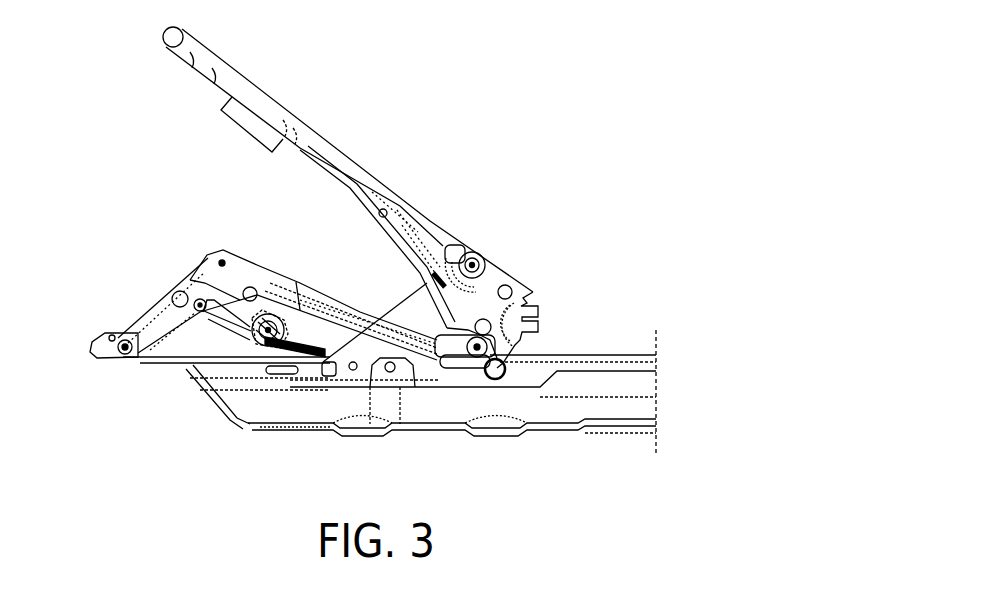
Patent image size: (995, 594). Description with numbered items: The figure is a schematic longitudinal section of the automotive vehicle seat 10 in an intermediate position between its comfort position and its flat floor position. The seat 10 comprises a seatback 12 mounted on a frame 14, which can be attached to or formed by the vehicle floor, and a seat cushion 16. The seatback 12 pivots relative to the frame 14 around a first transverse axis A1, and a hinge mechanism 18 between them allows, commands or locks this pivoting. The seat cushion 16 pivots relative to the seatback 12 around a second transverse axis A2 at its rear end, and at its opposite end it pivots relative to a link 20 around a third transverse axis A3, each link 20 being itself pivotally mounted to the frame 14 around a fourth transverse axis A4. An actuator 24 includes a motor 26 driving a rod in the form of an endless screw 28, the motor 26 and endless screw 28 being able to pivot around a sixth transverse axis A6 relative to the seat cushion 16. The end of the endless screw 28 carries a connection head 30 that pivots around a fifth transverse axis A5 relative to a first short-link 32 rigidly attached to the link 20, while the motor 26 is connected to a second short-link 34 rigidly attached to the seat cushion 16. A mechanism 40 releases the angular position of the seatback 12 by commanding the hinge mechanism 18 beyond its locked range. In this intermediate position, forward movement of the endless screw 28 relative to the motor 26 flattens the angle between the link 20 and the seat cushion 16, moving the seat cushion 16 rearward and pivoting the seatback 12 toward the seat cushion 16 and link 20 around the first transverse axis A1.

The automotive vehicle seat 10 is at (110, 137).
The seatback 12 is at (336, 160).
The frame 14 is at (567, 370).
The seat cushion 16 is at (362, 318).
The hinge mechanism 18 is at (477, 250).
The link 20 is at (148, 318).
The actuator 24 is at (252, 468).
The motor 26 is at (253, 328).
The endless screw 28 is at (307, 352).
The connection head 30 is at (207, 302).
The first short-link 32 is at (170, 283).
The second short-link 34 is at (253, 288).
The mechanism for releasing the angular position of the seatback 40 is at (250, 122).
The first transverse axis A1 is at (490, 256).
The second transverse axis A2 is at (487, 388).
The third transverse axis A3 is at (223, 260).
The fourth transverse axis A4 is at (117, 358).
The fifth transverse axis A5 is at (198, 298).
The sixth transverse axis A6 is at (270, 322).